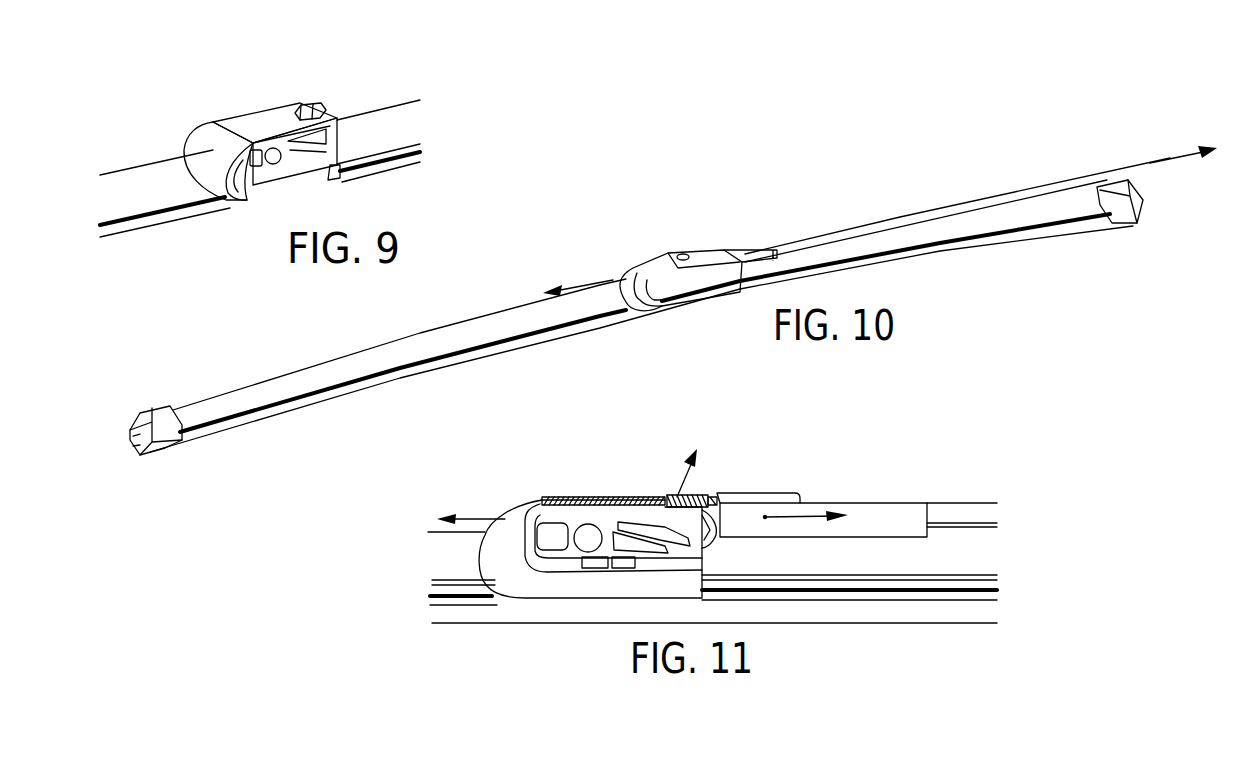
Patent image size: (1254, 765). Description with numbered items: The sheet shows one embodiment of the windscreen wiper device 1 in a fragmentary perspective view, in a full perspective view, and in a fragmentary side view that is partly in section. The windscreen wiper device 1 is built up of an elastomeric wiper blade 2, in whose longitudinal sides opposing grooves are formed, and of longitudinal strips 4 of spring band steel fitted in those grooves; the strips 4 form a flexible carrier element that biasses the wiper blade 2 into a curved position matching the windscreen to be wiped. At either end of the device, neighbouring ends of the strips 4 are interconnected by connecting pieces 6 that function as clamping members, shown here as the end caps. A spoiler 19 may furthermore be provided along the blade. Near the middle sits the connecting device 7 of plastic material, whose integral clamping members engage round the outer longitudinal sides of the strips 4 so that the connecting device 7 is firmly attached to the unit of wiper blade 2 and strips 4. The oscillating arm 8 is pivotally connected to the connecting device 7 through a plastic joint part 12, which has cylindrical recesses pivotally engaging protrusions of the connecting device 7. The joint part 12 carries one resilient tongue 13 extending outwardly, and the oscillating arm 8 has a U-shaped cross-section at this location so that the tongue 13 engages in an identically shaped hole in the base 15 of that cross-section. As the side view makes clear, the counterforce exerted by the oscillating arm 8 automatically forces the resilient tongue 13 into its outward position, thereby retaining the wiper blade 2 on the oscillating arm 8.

In FIG. 10, the windscreen wiper device 1 is at (787, 197).
In FIG. 9, the wiper blade 2 is at (187, 230).
In FIG. 10, the wiper blade 2 is at (202, 442).
In FIG. 11, the wiper blade 2 is at (853, 613).
In FIG. 11, the longitudinal strips 4 is at (997, 593).
In FIG. 10, the connecting pieces 6 is at (158, 420).
In FIG. 9, the connecting device 7 is at (210, 143).
In FIG. 10, the connecting device 7 is at (655, 307).
In FIG. 11, the connecting device 7 is at (525, 590).
In FIG. 10, the oscillating arm 8 is at (1062, 188).
In FIG. 9, the joint part 12 is at (265, 118).
In FIG. 11, the joint part 12 is at (653, 500).
In FIG. 9, the resilient tongue 13 is at (316, 107).
In FIG. 10, the resilient tongue 13 is at (683, 254).
In FIG. 11, the resilient tongue 13 is at (692, 497).
In FIG. 11, the base 15 is at (585, 498).
In FIG. 10, the spoiler 19 is at (346, 365).